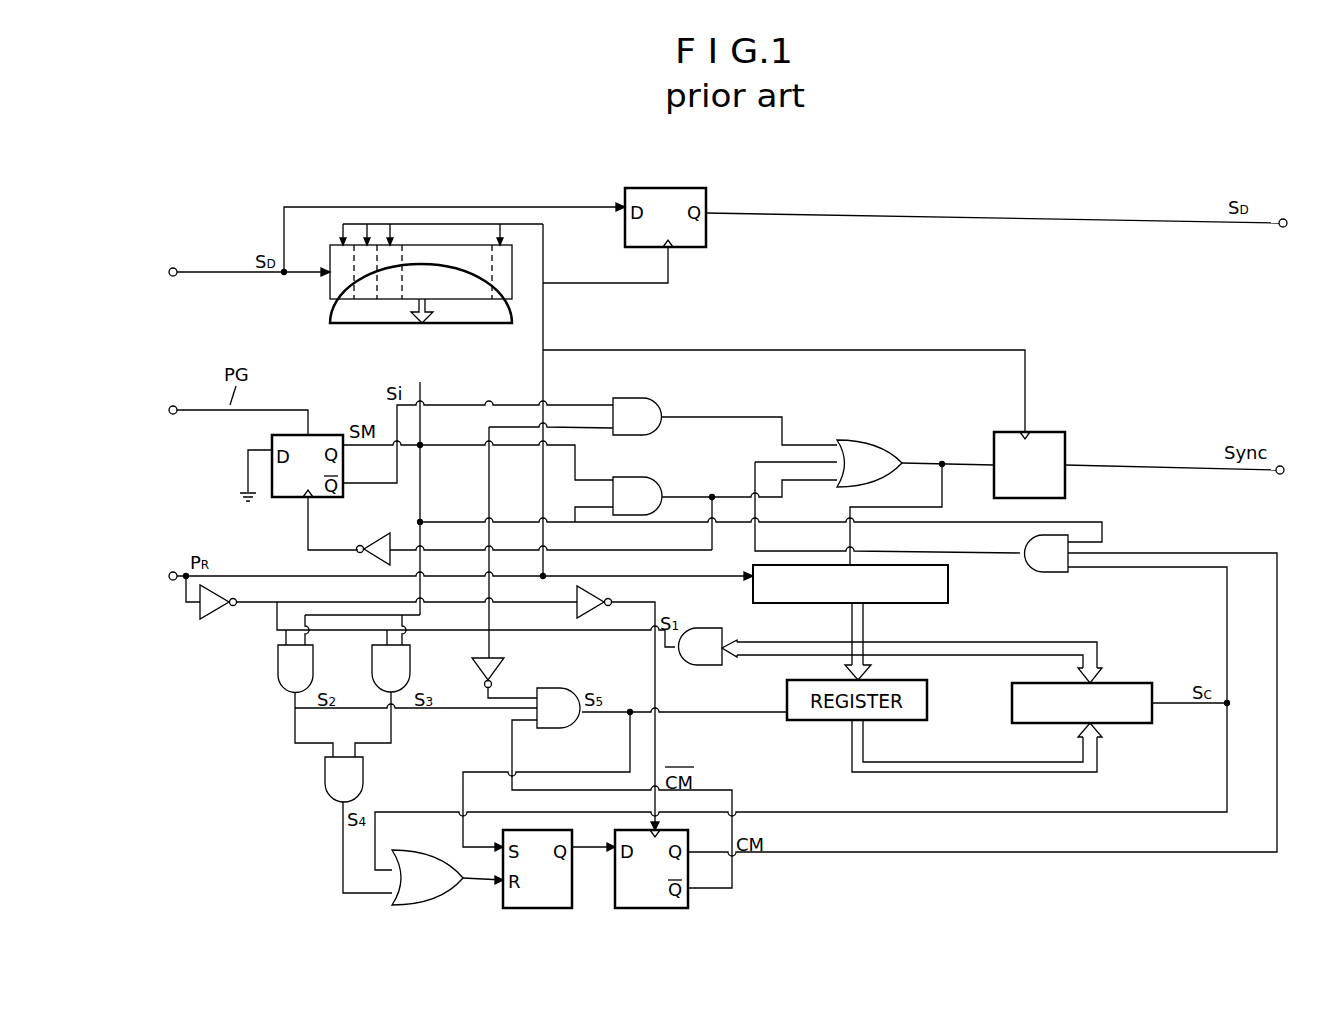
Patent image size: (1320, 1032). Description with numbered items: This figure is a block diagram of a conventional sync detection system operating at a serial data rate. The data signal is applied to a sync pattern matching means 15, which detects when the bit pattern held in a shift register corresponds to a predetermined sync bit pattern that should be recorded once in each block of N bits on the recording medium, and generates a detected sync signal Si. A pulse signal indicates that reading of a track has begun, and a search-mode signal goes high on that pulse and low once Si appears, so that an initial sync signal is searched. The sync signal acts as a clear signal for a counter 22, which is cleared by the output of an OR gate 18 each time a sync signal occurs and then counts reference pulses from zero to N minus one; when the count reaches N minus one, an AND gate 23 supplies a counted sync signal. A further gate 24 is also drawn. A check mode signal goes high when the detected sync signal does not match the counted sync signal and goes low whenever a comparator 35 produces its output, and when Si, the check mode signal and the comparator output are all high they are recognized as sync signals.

The sync pattern matching means 15 is at (350, 345).
The OR gate 18 is at (865, 445).
The counter 22 is at (948, 585).
The AND gate 23 is at (705, 666).
The AND gate 24 is at (650, 403).
The comparator 35 is at (1058, 432).